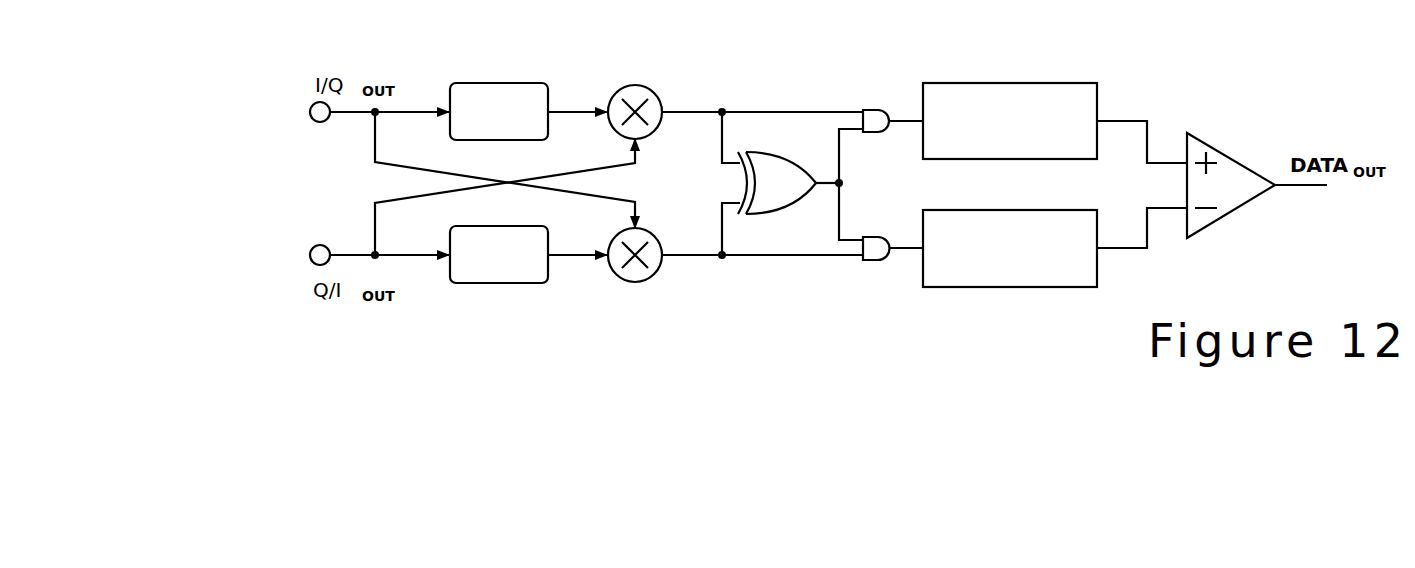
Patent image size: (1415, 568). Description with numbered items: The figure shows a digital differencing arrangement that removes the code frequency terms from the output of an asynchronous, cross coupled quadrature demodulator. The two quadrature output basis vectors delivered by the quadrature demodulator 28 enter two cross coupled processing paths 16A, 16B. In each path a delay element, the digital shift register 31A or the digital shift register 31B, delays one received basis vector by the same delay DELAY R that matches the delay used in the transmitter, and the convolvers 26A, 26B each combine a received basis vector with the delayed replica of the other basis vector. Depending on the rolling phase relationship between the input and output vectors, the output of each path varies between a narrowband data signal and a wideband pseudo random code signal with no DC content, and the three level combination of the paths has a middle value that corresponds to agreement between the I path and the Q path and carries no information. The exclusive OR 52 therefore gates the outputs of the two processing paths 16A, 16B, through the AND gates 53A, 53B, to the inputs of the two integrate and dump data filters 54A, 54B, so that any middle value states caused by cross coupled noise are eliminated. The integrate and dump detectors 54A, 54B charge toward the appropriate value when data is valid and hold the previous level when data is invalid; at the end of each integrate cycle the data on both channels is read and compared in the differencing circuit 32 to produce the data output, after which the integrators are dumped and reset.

The quadrature demodulator 28 is at (256, 183).
The digital shift register 31A is at (500, 83).
The digital shift register 31B is at (497, 283).
The convolver 26A is at (635, 86).
The convolver 26B is at (633, 282).
The first processing path 16A is at (738, 27).
The second processing path 16B is at (736, 338).
The exclusive OR 52 is at (807, 171).
The AND gate 53A is at (876, 109).
The AND gate 53B is at (877, 262).
The integrate and dump data filter 54A is at (988, 83).
The integrate and dump data filter 54B is at (1000, 287).
The differencing circuit 32 is at (1242, 208).